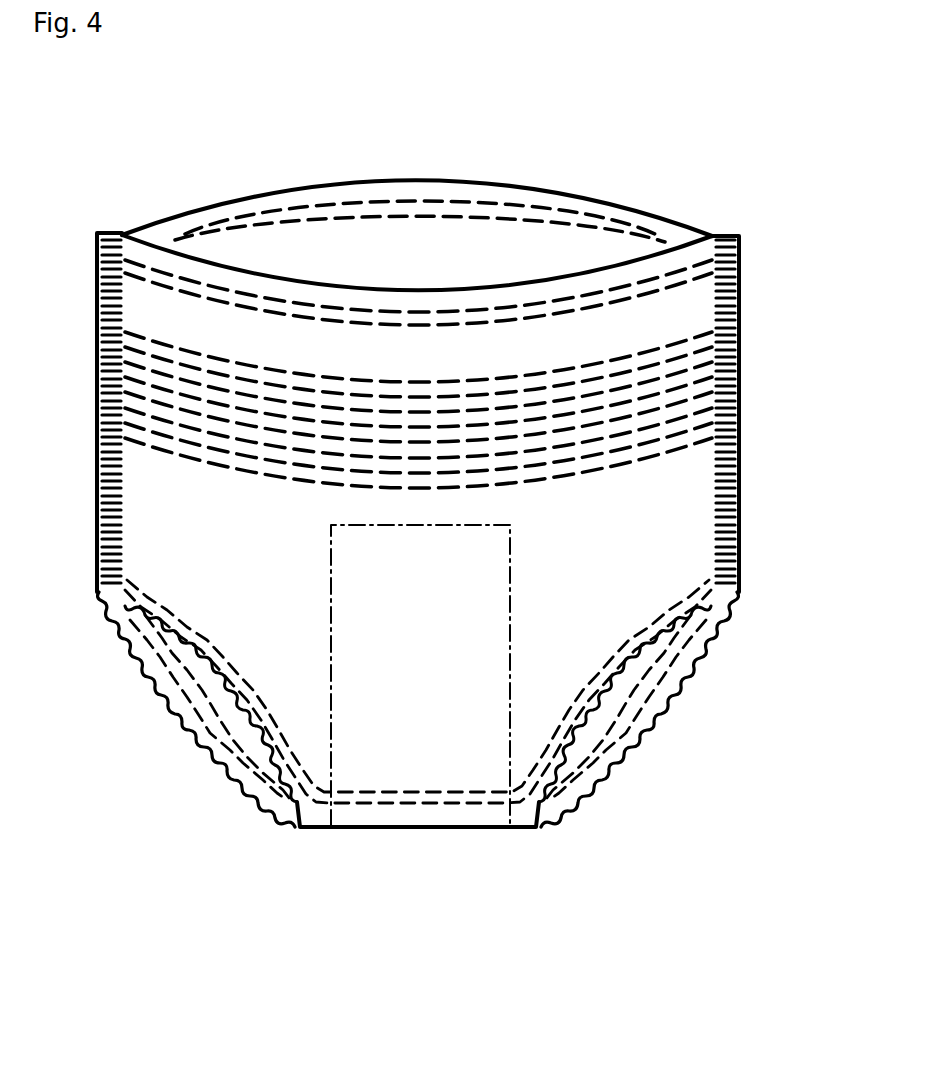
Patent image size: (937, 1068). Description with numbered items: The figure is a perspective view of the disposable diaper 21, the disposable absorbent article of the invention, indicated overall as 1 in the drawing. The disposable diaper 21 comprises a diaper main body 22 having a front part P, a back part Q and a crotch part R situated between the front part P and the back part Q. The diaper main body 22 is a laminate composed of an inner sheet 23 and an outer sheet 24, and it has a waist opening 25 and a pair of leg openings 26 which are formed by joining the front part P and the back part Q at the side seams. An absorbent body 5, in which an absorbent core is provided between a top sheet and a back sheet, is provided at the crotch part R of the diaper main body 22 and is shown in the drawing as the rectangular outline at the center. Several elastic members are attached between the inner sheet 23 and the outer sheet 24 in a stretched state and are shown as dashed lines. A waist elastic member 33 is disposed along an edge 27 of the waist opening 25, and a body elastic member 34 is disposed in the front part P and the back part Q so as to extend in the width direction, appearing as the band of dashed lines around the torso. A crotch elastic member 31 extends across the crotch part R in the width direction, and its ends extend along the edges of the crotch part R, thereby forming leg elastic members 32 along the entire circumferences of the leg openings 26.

The disposable pull-on diaper 1 is at (728, 188).
The disposable diaper 21 is at (418, 530).
The diaper main body 22 is at (617, 197).
The inner sheet 23 is at (295, 243).
The outer sheet 24 is at (173, 540).
The waist opening 25 is at (442, 248).
The leg openings 26 is at (213, 712).
The edge of the waist opening 27 is at (495, 182).
The crotch elastic member 31 is at (365, 808).
The leg elastic members 32 is at (168, 703).
The waist elastic member 33 is at (188, 233).
The body elastic member 34 is at (655, 348).
The absorbent body 5 is at (432, 725).
The front part P is at (657, 530).
The back part Q is at (350, 180).
The crotch part R is at (522, 830).